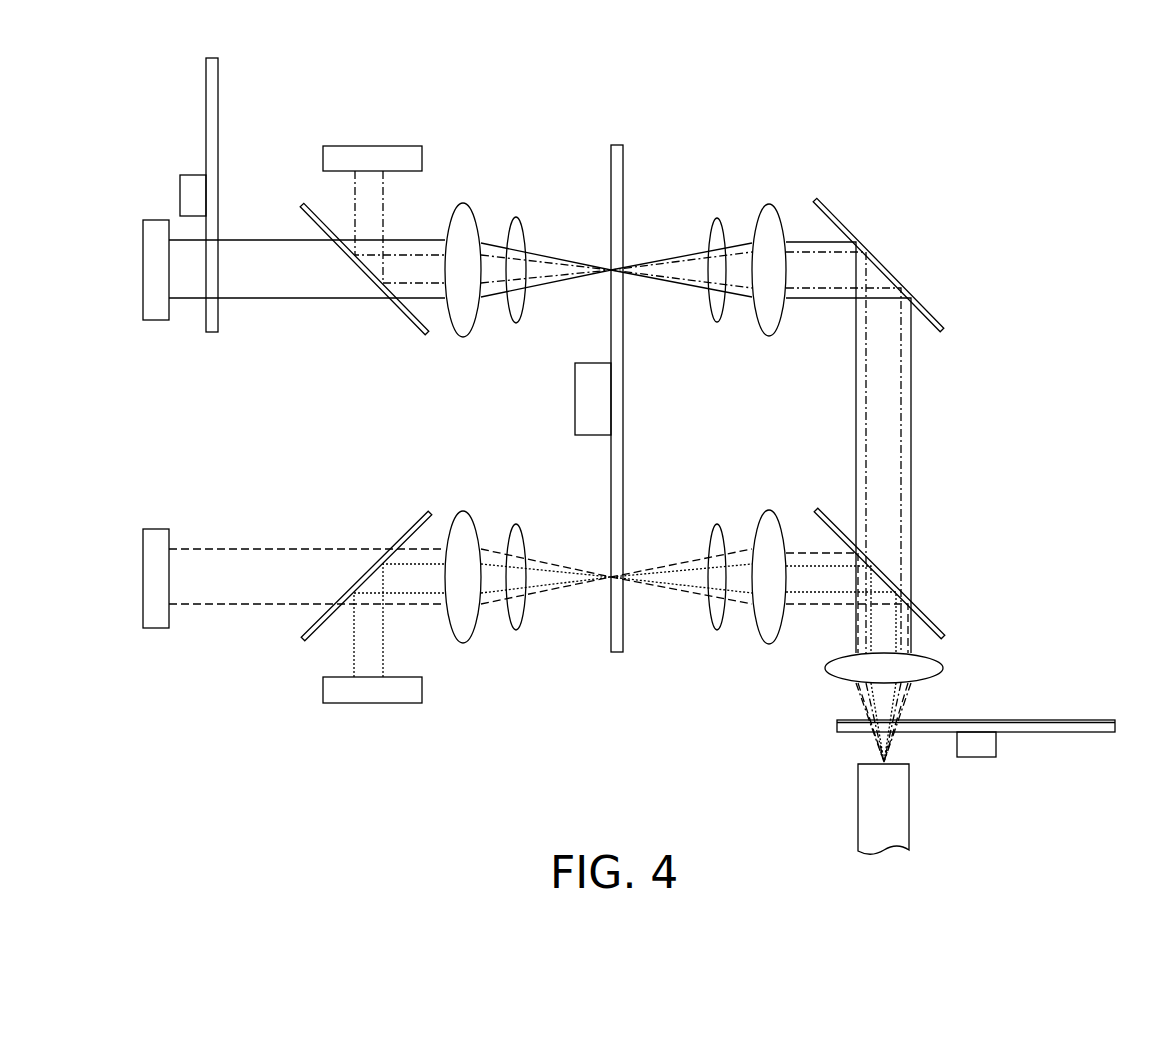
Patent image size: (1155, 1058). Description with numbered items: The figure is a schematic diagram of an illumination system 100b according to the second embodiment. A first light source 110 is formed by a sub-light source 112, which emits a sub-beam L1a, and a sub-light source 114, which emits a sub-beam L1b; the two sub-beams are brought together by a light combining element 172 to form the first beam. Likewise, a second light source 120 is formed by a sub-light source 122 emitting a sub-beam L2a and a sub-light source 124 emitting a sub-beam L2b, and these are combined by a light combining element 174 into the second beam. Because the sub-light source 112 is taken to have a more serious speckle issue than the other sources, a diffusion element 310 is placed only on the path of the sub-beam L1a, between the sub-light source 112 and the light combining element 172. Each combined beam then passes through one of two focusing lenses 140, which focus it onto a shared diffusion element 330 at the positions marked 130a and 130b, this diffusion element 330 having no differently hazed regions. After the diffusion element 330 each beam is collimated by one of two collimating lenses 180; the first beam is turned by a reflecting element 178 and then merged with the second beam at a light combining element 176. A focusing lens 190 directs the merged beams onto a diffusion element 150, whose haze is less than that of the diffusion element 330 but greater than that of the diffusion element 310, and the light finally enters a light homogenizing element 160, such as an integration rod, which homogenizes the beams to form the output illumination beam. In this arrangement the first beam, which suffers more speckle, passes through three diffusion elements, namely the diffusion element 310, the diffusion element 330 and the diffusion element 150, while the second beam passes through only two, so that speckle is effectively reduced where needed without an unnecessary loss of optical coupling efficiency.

The illumination system 100b is at (1061, 185).
The first light source 110 is at (263, 203).
The sub-light source 112 is at (157, 232).
The sub-light source 114 is at (328, 158).
The second light source 120 is at (268, 581).
The sub-light source 122 is at (157, 538).
The sub-light source 124 is at (340, 688).
The first aperture 130a is at (619, 130).
The second aperture 130b is at (617, 678).
The focusing lens 140 is at (526, 342).
The diffusion element 150 is at (1073, 721).
The light homogenizing element 160 is at (900, 820).
The light combining element 172 is at (418, 327).
The light combining element 174 is at (303, 636).
The light combining element 176 is at (943, 624).
The reflecting element 178 is at (943, 310).
The collimating lens 180 is at (788, 342).
The focusing lens 190 is at (933, 664).
The diffusion element 310 is at (208, 330).
The diffusion element 330 is at (623, 157).
The sub-beam L1a is at (243, 298).
The sub-beam L1b is at (383, 192).
The sub-beam L2a is at (277, 545).
The sub-beam L2b is at (383, 652).